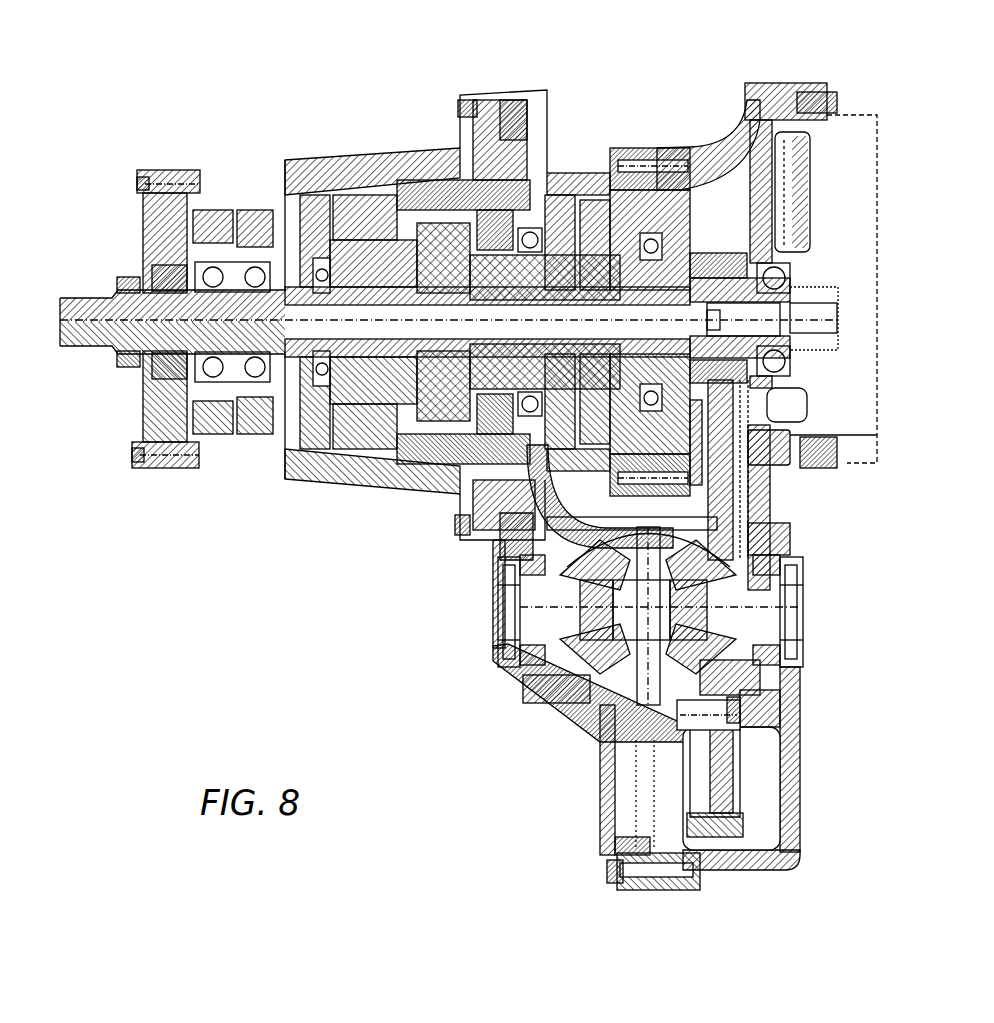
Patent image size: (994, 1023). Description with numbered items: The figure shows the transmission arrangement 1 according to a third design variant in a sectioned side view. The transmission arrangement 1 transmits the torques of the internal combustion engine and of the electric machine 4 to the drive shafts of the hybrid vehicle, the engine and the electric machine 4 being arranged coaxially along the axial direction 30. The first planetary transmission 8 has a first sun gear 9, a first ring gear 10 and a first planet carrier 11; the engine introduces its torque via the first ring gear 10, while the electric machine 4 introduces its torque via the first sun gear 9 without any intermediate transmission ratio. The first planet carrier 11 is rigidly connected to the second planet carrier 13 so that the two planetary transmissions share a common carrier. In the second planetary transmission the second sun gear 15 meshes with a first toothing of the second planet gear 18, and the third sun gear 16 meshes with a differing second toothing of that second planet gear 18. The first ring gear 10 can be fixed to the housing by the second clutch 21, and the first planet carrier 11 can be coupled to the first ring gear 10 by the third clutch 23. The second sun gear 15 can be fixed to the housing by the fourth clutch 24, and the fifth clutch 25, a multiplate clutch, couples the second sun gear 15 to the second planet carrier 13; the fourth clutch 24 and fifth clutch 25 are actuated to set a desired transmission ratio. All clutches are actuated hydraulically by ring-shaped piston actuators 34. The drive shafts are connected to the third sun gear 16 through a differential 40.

The transmission arrangement 1 is at (472, 445).
The electric machine 4 is at (705, 486).
The first planetary transmission 8 is at (426, 349).
The first sun gear 9 is at (450, 230).
The first ring gear 10 is at (431, 298).
The first planet carrier 11 is at (475, 409).
The second planet carrier 13 is at (529, 138).
The second sun gear 15 is at (469, 393).
The third sun gear 16 is at (423, 404).
The second planet gear 18 is at (479, 567).
The second clutch 21 is at (152, 405).
The third clutch 23 is at (345, 377).
The fourth clutch 24 is at (678, 285).
The fifth clutch 25 is at (511, 688).
The axial direction 30 is at (117, 318).
The actuator 34 is at (202, 326).
The differential 40 is at (663, 675).